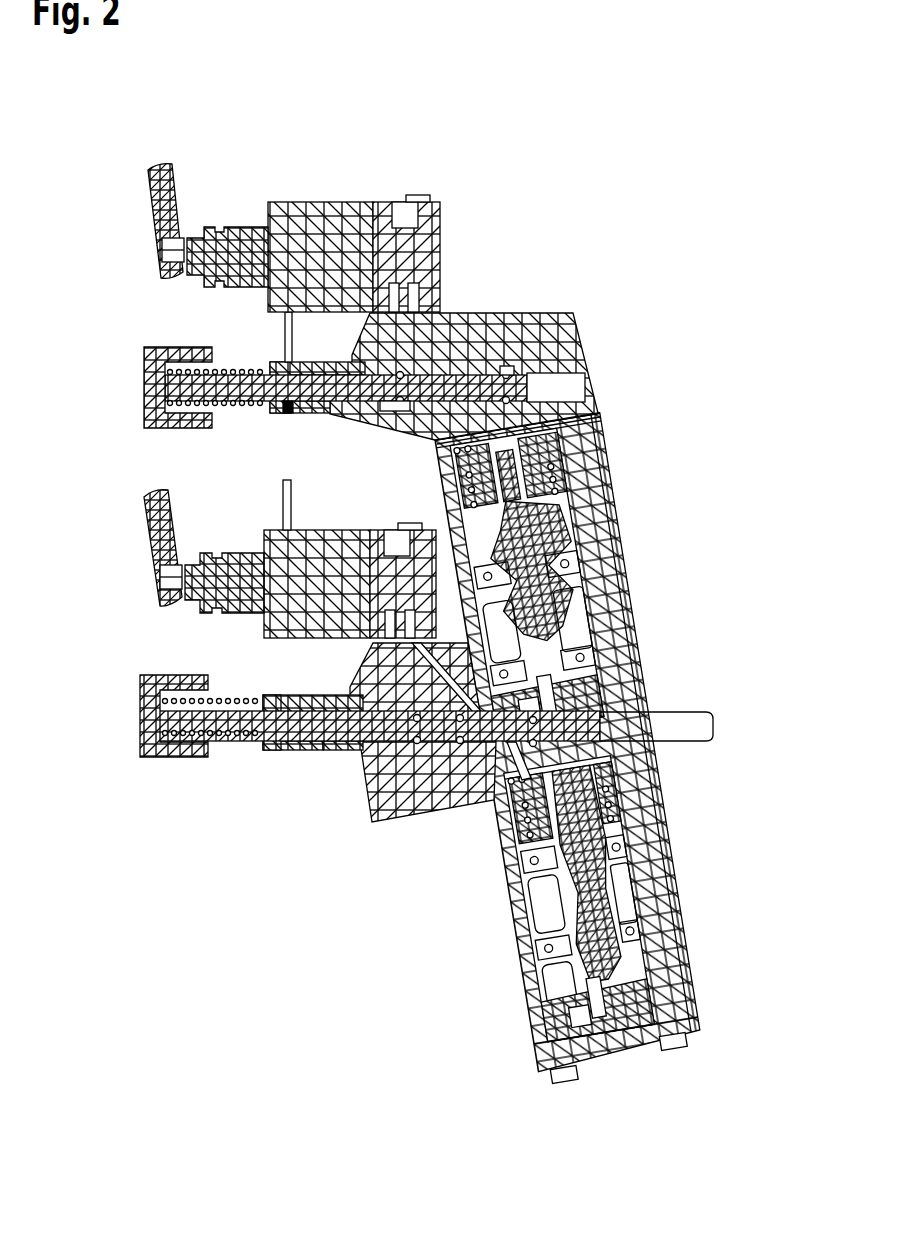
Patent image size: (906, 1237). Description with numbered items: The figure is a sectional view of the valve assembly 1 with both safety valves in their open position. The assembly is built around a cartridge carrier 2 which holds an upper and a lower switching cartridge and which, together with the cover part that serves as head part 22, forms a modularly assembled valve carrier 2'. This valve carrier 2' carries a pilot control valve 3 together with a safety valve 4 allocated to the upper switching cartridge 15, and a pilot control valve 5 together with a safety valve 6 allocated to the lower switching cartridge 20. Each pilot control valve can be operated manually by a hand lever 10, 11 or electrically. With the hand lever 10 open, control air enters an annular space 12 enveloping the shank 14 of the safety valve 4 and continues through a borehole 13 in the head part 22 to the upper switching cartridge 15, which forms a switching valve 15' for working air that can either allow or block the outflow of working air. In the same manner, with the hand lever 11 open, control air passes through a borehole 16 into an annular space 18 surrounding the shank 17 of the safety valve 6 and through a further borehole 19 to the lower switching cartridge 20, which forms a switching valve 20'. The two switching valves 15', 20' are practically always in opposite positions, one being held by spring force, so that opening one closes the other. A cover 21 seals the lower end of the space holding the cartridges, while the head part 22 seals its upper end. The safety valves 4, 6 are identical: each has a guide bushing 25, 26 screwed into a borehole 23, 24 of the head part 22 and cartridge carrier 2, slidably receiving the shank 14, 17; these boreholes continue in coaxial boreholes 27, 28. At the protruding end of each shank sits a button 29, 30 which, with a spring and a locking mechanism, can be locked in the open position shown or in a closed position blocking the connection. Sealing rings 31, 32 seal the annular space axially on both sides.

The valve assembly 1 is at (600, 216).
The cartridge carrier 2 is at (624, 744).
The valve carrier 2' is at (696, 440).
The pilot control valve 3 is at (330, 222).
The safety valve 4 is at (138, 421).
The pilot control valve 5 is at (243, 550).
The safety valve 6 is at (136, 746).
The hand lever 10 is at (148, 187).
The hand lever 11 is at (146, 515).
The annular space 12 is at (508, 373).
The borehole 13 is at (560, 424).
The shank 14 is at (520, 388).
The upper switching cartridge 15 is at (617, 591).
The switching valve 15' is at (587, 825).
The borehole 16 is at (417, 670).
The shank 17 is at (395, 745).
The annular space 18 is at (470, 757).
The borehole 19 is at (500, 783).
The lower switching cartridge 20 is at (658, 900).
The switching valve 20' is at (624, 891).
The cover 21 is at (654, 1050).
The head part 22 is at (558, 350).
The borehole 23 is at (382, 410).
The borehole 24 is at (355, 758).
The guide bushing 25 is at (335, 410).
The guide bushing 26 is at (318, 758).
The borehole 27 is at (577, 397).
The borehole 28 is at (602, 730).
The button 29 is at (148, 362).
The button 30 is at (148, 690).
The sealing ring 31 is at (401, 401).
The sealing ring 32 is at (513, 378).